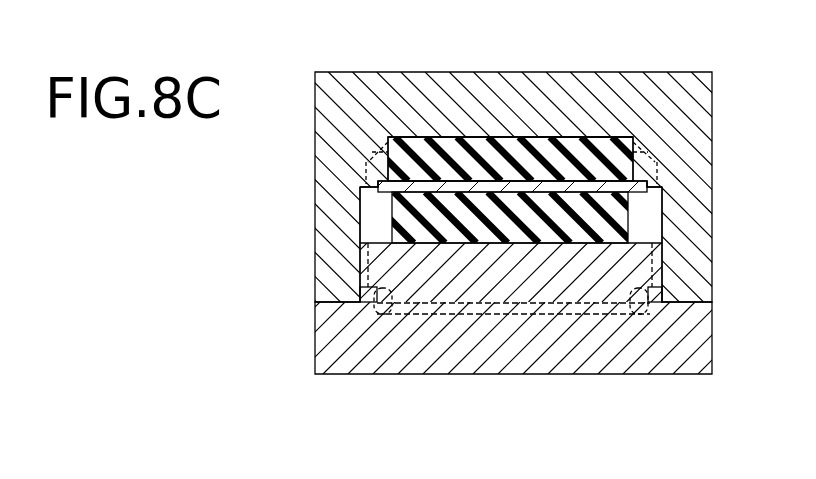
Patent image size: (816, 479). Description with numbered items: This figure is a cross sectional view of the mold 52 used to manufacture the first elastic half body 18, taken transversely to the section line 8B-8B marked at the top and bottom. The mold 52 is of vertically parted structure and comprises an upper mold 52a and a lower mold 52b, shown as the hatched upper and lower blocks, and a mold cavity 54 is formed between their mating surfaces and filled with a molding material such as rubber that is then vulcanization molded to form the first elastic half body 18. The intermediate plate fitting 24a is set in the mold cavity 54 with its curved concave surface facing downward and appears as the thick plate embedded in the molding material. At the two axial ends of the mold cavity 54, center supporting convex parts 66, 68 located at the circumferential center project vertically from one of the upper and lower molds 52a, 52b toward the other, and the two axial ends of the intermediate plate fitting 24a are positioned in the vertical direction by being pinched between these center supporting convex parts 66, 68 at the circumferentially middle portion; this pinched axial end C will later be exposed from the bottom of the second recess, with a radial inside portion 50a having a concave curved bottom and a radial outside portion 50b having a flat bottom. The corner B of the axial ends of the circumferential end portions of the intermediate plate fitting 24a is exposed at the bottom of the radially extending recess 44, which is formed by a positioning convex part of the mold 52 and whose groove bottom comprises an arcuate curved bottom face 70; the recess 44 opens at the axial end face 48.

The mold 52 is at (222, 256).
The upper mold 52a is at (310, 282).
The lower mold 52b is at (310, 325).
The axial end face 48 is at (404, 161).
The intermediate plate fitting 24a is at (485, 162).
The first elastic half body 18 is at (520, 128).
The mold cavity 54 is at (551, 148).
The radial outside portion 50b is at (388, 153).
The center supporting convex part 68 is at (385, 171).
The axial end C is at (388, 181).
The center supporting convex part 66 is at (376, 216).
The radial inside portion 50a is at (395, 212).
The curved bottom face 70 is at (385, 306).
The recess 44 is at (360, 316).
The corner B is at (380, 295).
The line 8B- 8B is at (378, 58).